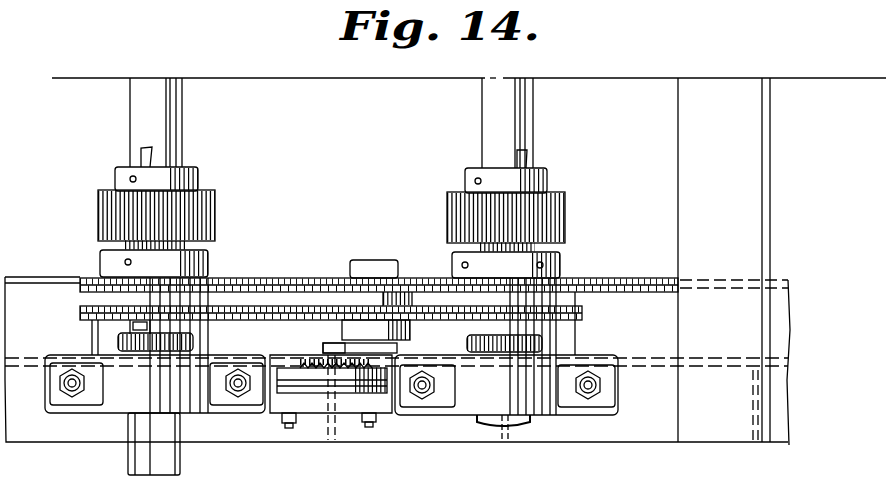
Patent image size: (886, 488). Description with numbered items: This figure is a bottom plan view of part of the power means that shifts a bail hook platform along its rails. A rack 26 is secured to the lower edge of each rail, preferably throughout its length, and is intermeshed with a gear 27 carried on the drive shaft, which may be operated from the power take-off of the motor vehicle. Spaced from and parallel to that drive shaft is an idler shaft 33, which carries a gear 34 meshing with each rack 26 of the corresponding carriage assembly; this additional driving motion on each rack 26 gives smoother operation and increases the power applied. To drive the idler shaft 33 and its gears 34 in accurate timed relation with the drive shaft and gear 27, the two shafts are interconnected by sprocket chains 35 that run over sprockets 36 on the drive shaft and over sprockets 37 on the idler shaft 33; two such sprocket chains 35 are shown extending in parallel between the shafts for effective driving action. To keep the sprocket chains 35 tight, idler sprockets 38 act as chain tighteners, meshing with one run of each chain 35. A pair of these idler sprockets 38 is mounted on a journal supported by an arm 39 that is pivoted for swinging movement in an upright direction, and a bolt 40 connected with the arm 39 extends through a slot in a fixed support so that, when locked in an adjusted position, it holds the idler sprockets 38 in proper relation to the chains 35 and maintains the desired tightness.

The rack 26 is at (140, 105).
The gear 27 is at (110, 218).
The idler shaft 33 is at (518, 122).
The gear 34 is at (548, 222).
The sprocket chain 35 is at (262, 304).
The sprocket 36 is at (87, 306).
The sprocket 37 is at (577, 306).
The idler sprocket 38 is at (353, 308).
The arm 39 is at (320, 395).
The bolt 40 is at (368, 426).